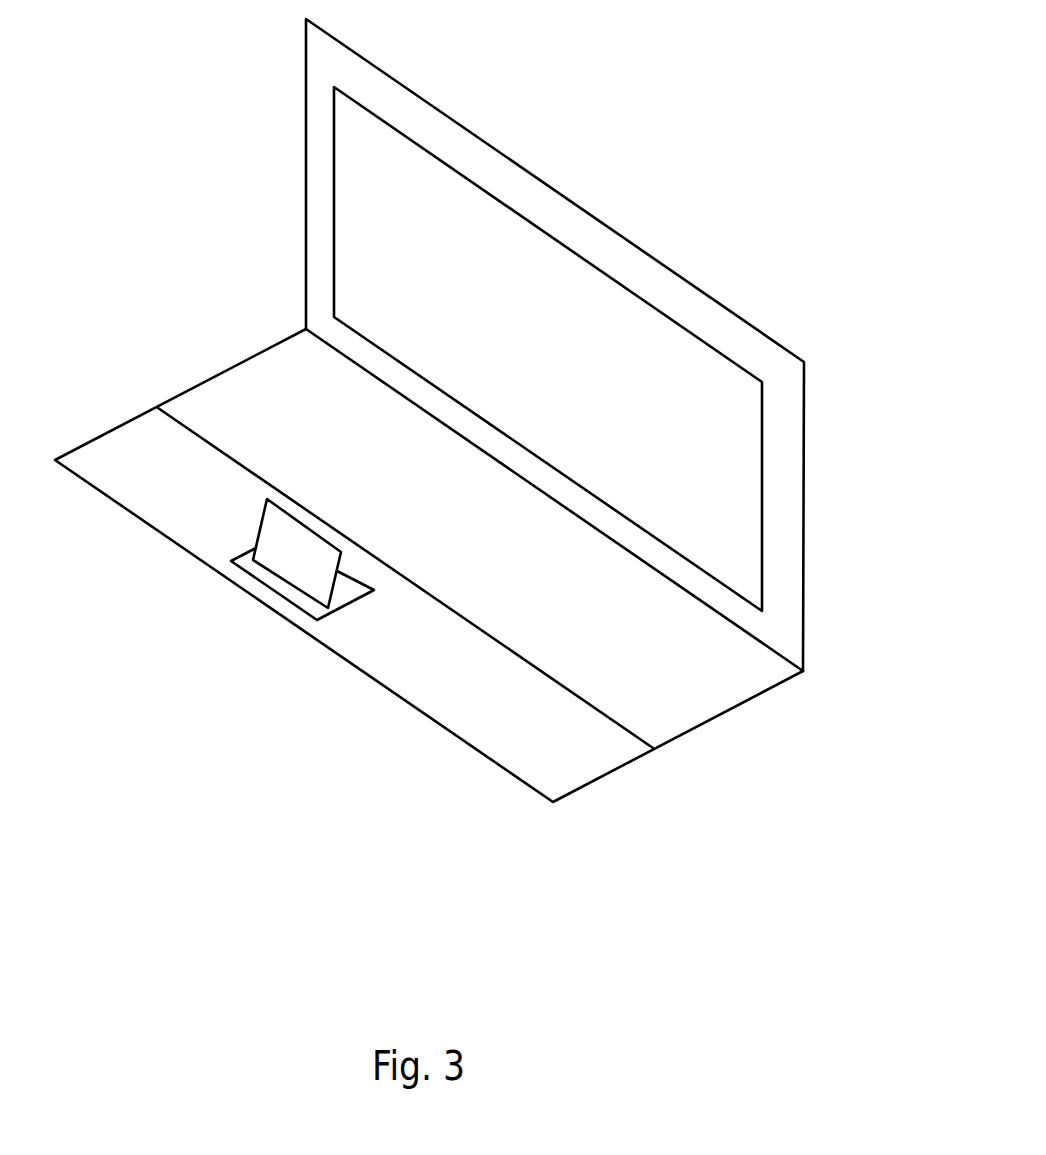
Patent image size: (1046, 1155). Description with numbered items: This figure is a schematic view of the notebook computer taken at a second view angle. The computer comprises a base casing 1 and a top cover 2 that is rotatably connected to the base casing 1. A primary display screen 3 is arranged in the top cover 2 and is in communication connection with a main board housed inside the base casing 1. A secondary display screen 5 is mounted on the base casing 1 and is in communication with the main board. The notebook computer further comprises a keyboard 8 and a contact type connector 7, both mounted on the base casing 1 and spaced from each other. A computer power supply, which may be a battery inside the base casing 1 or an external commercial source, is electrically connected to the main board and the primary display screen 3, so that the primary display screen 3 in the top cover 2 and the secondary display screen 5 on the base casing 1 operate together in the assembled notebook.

The base casing 1 is at (607, 777).
The top cover 2 is at (804, 518).
The primary display screen 3 is at (457, 238).
The secondary display screen 5 is at (306, 559).
The contact type connector 7 is at (306, 604).
The keyboard 8 is at (636, 617).